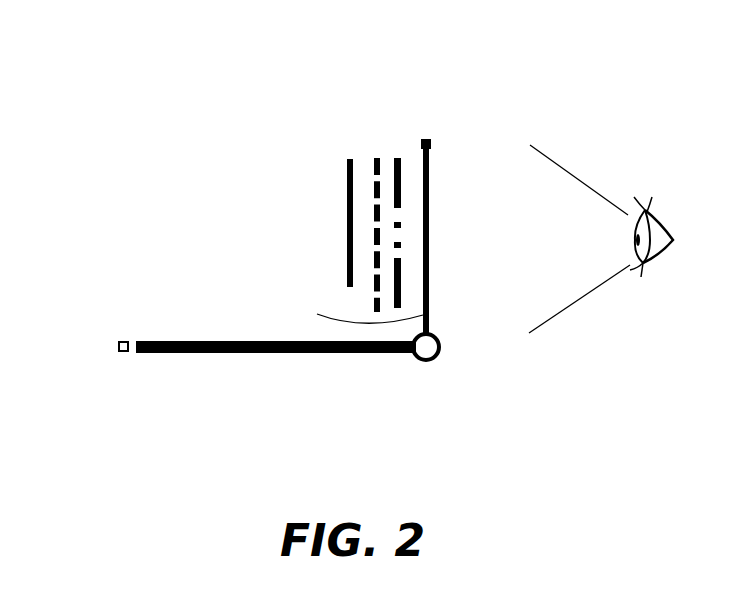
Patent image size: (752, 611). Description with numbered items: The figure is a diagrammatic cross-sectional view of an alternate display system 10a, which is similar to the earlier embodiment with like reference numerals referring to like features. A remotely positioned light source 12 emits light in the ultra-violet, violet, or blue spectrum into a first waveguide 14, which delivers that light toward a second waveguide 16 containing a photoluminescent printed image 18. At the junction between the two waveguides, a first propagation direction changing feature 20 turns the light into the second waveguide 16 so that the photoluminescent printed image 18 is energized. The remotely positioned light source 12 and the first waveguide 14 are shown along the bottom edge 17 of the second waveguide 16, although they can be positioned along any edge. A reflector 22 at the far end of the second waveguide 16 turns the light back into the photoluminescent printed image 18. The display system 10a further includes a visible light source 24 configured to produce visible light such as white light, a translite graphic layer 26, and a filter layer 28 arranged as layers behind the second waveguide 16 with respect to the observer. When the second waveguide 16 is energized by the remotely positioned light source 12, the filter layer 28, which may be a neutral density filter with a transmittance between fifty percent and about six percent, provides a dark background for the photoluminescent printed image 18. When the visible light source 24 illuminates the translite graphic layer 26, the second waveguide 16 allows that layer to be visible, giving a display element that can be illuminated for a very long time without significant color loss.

The alternate display system 10a is at (485, 92).
The remotely positioned light source 12 is at (118, 346).
The first waveguide 14 is at (262, 353).
The second waveguide 16 is at (430, 256).
The bottom edge 17 is at (355, 314).
The photoluminescent printed image 18 is at (430, 200).
The first propagation direction changing feature 20 is at (440, 346).
The reflector 22 is at (432, 144).
The visible light source 24 is at (346, 224).
The translite graphic layer 26 is at (377, 158).
The filter layer 28 is at (398, 158).